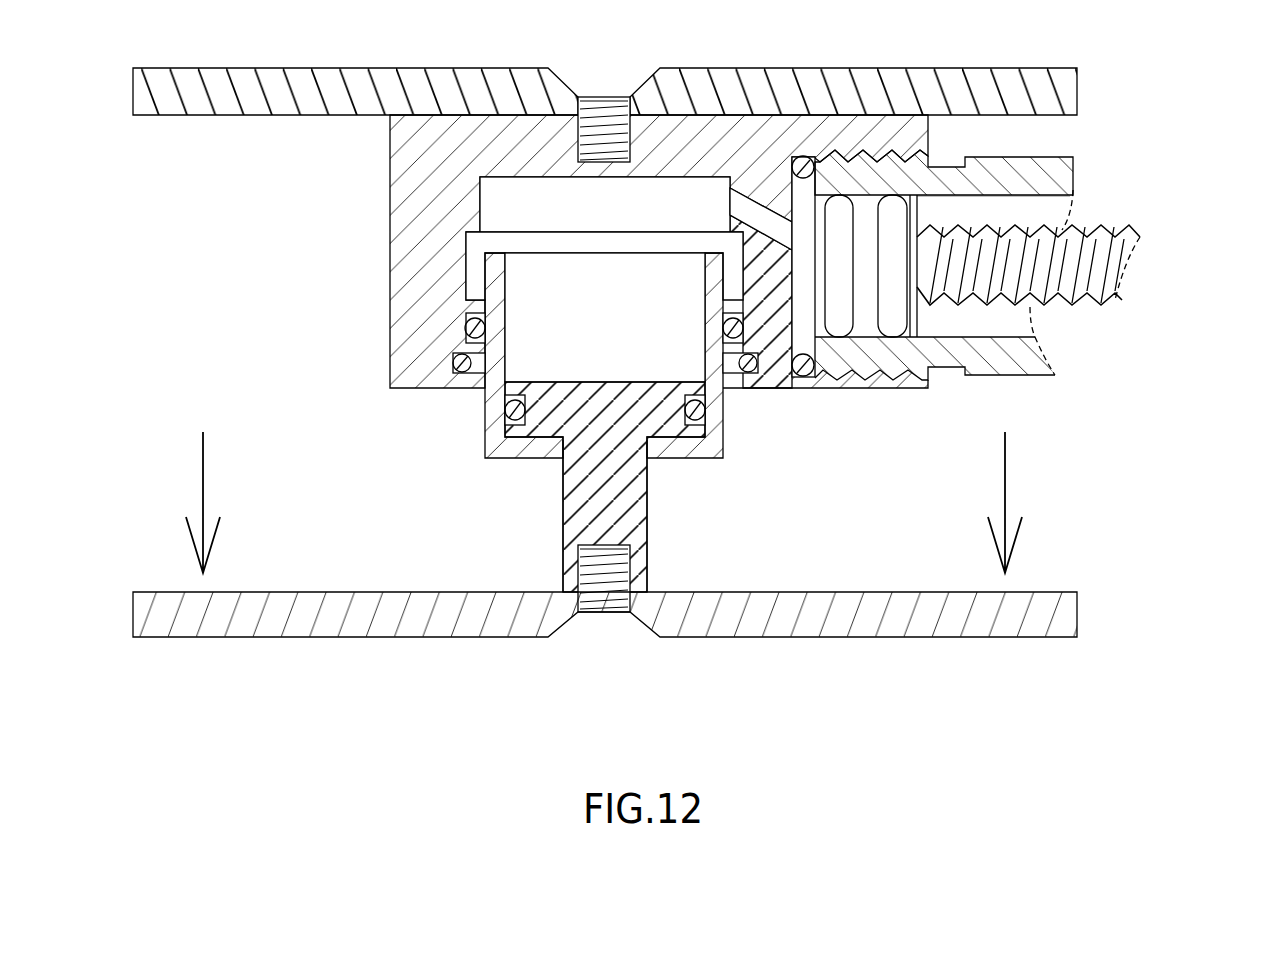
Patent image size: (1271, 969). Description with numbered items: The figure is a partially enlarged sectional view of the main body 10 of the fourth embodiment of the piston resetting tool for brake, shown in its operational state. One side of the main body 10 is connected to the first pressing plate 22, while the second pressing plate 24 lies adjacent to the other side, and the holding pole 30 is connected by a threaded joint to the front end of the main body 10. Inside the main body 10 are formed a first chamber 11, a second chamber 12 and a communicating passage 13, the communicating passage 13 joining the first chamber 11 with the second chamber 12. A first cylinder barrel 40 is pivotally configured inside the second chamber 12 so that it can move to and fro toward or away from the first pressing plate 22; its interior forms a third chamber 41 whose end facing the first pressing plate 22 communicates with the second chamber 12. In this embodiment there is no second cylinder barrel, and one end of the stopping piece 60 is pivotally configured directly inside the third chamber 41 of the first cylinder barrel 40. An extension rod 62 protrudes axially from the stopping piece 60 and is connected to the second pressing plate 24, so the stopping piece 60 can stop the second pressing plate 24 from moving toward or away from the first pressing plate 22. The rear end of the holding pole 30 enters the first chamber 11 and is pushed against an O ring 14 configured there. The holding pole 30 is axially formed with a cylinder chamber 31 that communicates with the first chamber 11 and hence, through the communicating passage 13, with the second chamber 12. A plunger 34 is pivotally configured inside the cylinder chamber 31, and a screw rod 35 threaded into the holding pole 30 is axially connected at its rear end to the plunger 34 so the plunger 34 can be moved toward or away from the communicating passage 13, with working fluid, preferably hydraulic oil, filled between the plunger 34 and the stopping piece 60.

The main body 10 is at (912, 130).
The first chamber 11 is at (802, 307).
The second chamber 12 is at (650, 187).
The communicating passage 13 is at (755, 212).
The O ring 14 is at (803, 363).
The first pressing plate 22 is at (1052, 95).
The second pressing plate 24 is at (1060, 617).
The holding pole 30 is at (1053, 172).
The cylinder chamber 31 is at (1030, 213).
The plunger 34 is at (875, 297).
The screw rod 35 is at (1110, 257).
The first cylinder barrel 40 is at (498, 283).
The third chamber 41 is at (692, 352).
The stopping piece 60 is at (578, 393).
The extension rod 62 is at (592, 518).